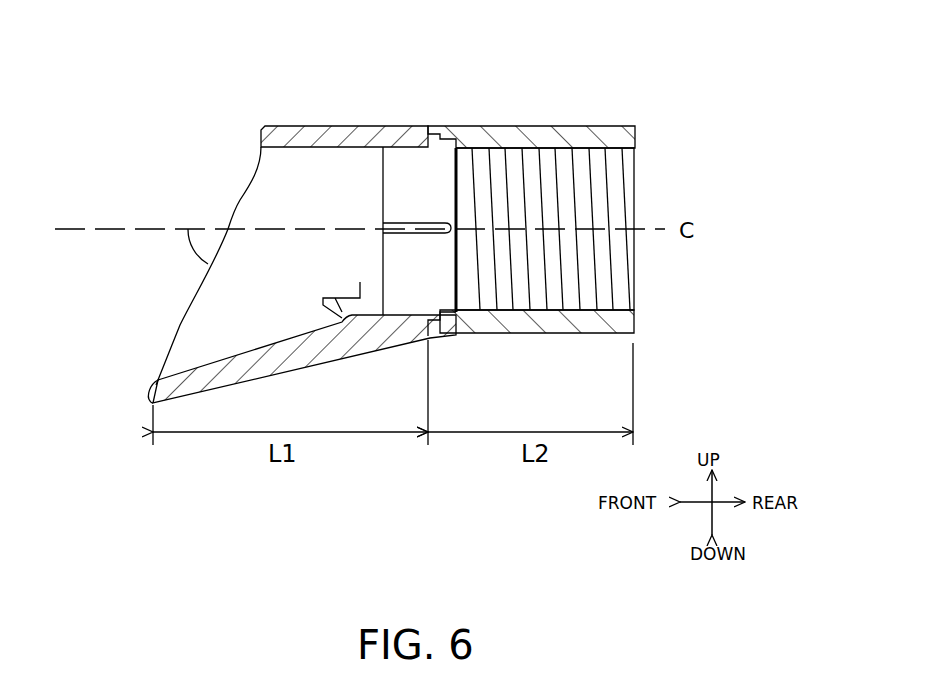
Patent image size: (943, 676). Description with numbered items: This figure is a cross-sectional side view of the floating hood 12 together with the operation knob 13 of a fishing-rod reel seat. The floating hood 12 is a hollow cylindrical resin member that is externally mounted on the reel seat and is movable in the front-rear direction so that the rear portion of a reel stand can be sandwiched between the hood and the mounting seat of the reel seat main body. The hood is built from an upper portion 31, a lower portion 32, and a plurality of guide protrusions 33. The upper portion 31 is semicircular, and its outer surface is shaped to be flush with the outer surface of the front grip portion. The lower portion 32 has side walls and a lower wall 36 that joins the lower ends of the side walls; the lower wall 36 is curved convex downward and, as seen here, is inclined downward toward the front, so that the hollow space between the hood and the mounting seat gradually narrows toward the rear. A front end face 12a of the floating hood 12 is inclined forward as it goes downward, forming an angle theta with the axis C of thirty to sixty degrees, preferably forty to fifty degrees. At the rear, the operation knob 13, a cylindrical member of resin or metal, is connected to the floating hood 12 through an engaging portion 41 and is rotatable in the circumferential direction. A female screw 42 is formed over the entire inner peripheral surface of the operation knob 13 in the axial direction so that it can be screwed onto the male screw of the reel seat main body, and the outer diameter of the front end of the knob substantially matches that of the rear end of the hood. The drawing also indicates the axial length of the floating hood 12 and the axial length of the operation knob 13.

The floating hood 12 is at (220, 82).
The front end face 12a is at (174, 326).
The operation knob 13 is at (604, 82).
The upper portion 31 is at (300, 172).
The lower portion 32 is at (270, 322).
The guide protrusion 33 is at (430, 222).
The lower wall 36 is at (200, 392).
The engaging portion 41 is at (446, 130).
The female screw 42 is at (568, 270).